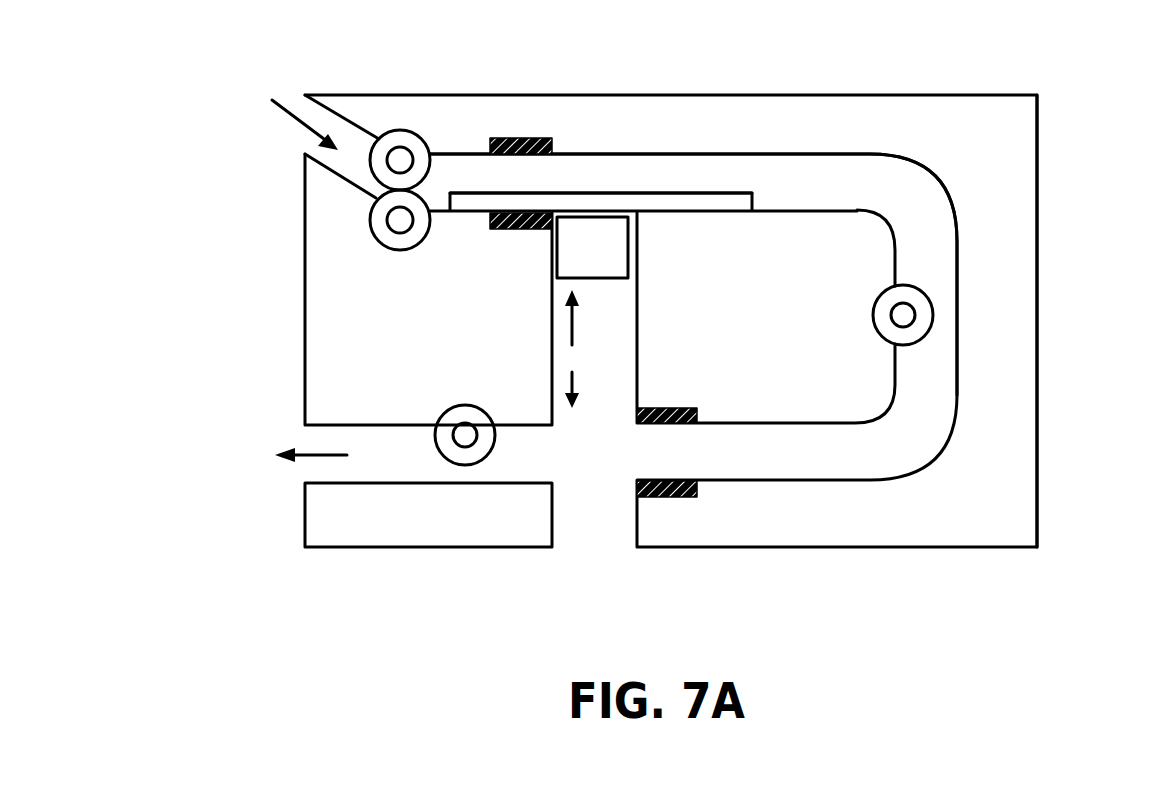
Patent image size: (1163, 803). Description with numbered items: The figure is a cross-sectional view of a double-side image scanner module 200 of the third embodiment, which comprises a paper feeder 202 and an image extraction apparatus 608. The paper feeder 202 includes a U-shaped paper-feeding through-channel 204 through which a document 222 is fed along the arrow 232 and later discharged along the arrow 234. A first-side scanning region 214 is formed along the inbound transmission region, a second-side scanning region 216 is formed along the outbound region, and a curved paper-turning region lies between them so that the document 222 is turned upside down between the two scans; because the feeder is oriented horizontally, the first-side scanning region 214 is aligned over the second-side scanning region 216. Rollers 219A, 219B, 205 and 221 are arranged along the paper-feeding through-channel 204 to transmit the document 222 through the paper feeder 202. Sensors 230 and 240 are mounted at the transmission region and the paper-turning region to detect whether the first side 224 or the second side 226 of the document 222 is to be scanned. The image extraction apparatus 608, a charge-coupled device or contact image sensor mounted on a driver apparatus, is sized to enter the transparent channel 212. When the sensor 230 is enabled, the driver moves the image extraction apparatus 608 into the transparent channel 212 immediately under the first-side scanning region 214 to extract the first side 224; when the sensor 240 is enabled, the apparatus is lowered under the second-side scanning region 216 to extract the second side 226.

The double-side image scanner module 200 is at (283, 314).
The paper feeder 202 is at (1038, 300).
The paper-feeding through-channel 204 is at (810, 177).
The roller 205 is at (917, 287).
The transparent channel 212 is at (580, 349).
The first-side scanning region 214 is at (766, 316).
The second-side scanning region 216 is at (428, 314).
The roller 219A is at (422, 150).
The roller 219B is at (380, 243).
The roller 221 is at (468, 415).
The document 222 is at (757, 197).
The first side 224 is at (688, 220).
The second side 226 is at (603, 182).
The sensor 230 is at (497, 229).
The arrow 232 is at (275, 117).
The arrow 234 is at (280, 459).
The sensor 240 is at (673, 498).
The image extraction apparatus 608 is at (600, 270).